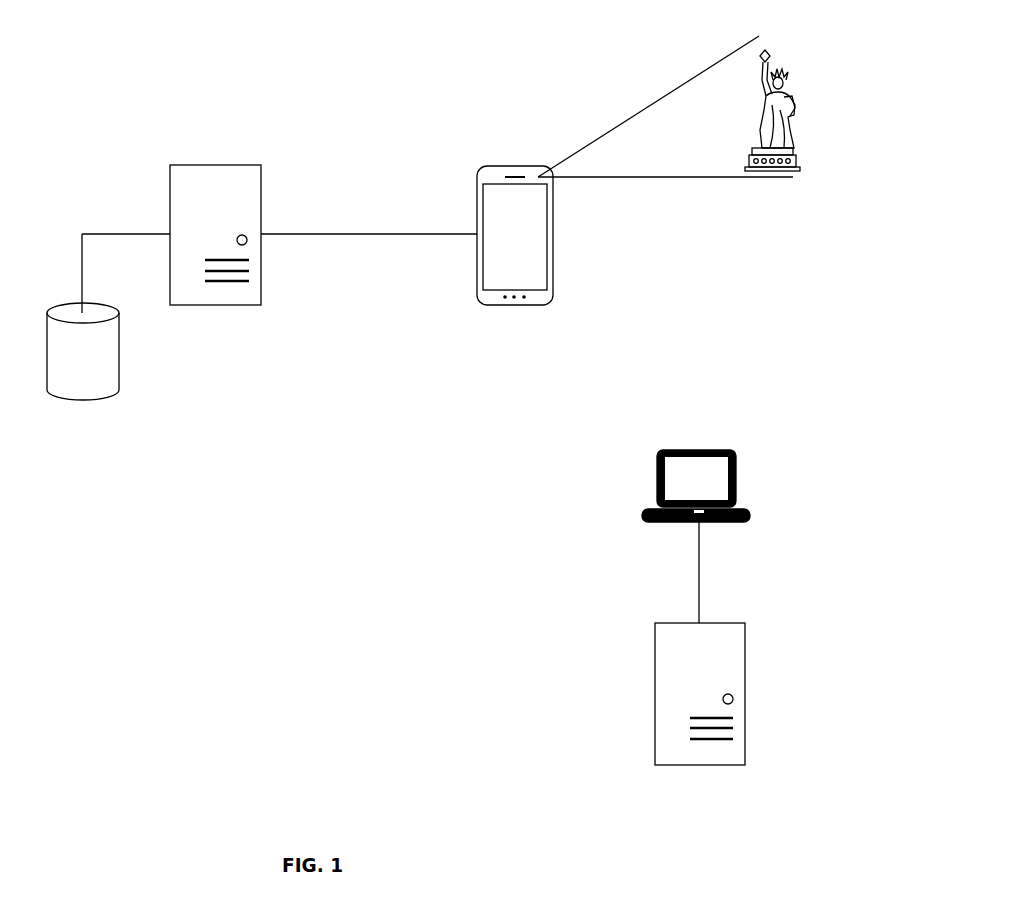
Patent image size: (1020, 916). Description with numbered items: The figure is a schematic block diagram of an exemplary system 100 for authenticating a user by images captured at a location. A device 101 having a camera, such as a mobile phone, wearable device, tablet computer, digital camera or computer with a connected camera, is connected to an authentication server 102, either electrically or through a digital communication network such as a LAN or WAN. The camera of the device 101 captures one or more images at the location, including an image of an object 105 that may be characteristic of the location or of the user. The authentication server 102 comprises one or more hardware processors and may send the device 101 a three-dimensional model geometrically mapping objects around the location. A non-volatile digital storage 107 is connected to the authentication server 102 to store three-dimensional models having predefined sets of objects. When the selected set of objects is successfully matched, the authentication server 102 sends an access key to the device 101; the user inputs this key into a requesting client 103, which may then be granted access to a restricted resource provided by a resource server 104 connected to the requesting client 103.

The system 100 is at (340, 466).
The device having a camera 101 is at (607, 170).
The authentication server 102 is at (216, 197).
The requesting client 103 is at (700, 450).
The resource server 104 is at (701, 733).
The object 105 is at (810, 109).
The non-volatile digital storage 107 is at (87, 382).